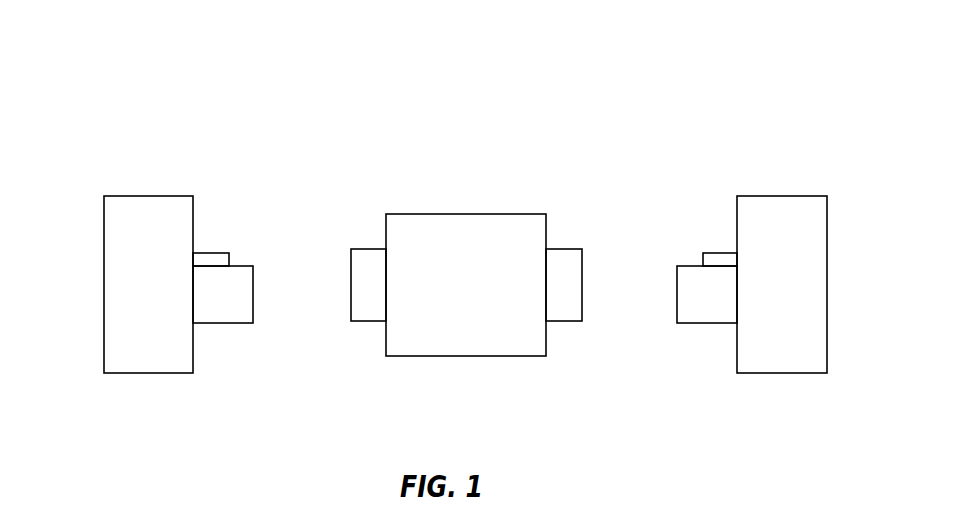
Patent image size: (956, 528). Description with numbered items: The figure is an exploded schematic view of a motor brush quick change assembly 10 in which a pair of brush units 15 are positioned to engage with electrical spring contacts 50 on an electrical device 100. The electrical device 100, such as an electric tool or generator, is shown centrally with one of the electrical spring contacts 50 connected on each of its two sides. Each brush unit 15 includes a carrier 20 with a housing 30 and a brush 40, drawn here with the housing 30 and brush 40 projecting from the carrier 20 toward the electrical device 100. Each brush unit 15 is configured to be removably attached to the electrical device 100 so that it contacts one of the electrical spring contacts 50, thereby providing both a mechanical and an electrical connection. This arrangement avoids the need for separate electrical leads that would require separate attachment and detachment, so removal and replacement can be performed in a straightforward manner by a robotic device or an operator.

The motor brush quick change assembly 10 is at (276, 80).
The brush unit 15 is at (62, 225).
The carrier 20 is at (157, 338).
The housing 30 is at (214, 260).
The brush 40 is at (227, 312).
The electrical spring contact 50 is at (367, 270).
The electrical device 100 is at (478, 294).